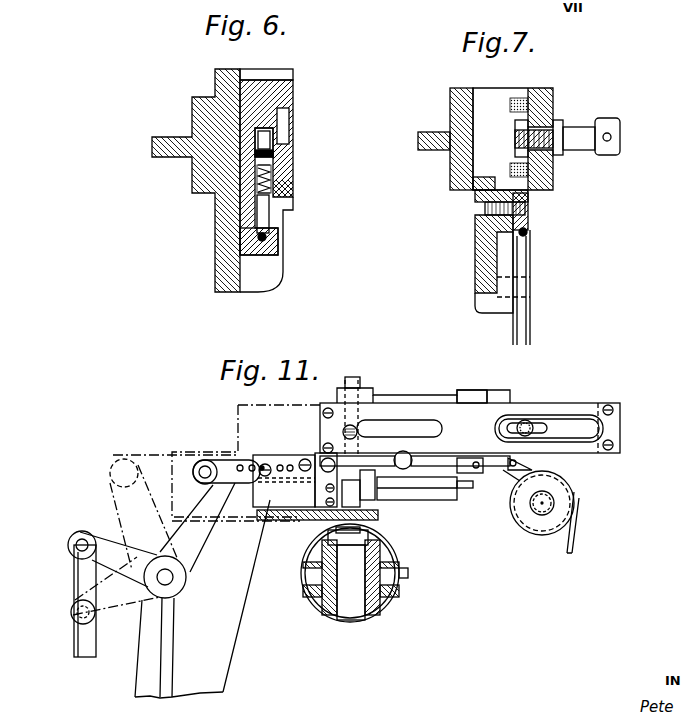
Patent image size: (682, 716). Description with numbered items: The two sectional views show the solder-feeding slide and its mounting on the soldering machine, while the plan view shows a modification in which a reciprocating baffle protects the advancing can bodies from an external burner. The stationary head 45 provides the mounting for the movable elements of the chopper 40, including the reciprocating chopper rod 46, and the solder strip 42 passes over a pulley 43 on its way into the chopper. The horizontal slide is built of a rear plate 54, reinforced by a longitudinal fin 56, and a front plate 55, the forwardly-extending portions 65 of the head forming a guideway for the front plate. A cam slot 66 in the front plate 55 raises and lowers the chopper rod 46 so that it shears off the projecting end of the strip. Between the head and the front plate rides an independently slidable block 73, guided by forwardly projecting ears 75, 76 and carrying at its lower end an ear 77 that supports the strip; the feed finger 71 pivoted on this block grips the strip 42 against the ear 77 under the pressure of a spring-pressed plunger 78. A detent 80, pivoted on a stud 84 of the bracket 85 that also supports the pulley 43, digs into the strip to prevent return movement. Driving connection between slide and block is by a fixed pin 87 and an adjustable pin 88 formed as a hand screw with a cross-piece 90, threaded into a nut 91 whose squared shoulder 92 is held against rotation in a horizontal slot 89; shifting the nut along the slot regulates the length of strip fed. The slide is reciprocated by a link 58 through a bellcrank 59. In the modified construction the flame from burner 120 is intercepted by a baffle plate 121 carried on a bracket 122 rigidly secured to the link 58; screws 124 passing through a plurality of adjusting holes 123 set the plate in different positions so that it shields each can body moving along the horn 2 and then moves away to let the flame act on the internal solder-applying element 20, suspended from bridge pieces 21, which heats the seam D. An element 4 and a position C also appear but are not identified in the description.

In FIG. 6, the stationary head 45 is at (222, 72).
In FIG. 6, the slide-block 73 is at (257, 102).
In FIG. 6, the forwardly-extending portions 65 is at (293, 72).
In FIG. 11, the forwardly-extending portions 65 is at (368, 397).
In FIG. 6, the forwardly projecting ear 76 is at (300, 80).
In FIG. 11, the forwardly projecting ear 76 is at (466, 392).
In FIG. 6, the front plate 55 is at (285, 126).
In FIG. 7, the front plate 55 is at (548, 190).
In FIG. 11, the front plate 55 is at (474, 425).
In FIG. 6, the driving pin 87 is at (275, 140).
In FIG. 6, the rear plate 54 is at (201, 185).
In FIG. 7, the rear plate 54 is at (460, 172).
In FIG. 6, the spring-pressed plunger 78 is at (240, 200).
In FIG. 6, the forwardly projecting ear 75 is at (283, 197).
In FIG. 11, the forwardly projecting ear 75 is at (457, 458).
In FIG. 6, the feed finger 71 is at (270, 215).
In FIG. 11, the feed finger 71 is at (478, 473).
In FIG. 6, the solder strip 42 is at (268, 238).
In FIG. 7, the solder strip 42 is at (527, 234).
In FIG. 11, the solder strip 42 is at (462, 474).
In FIG. 6, the forwardly projecting ear 77 is at (281, 250).
In FIG. 11, the forwardly projecting ear 77 is at (462, 488).
In FIG. 6, the longitudinal fin 56 is at (168, 141).
In FIG. 7, the longitudinal fin 56 is at (427, 133).
In FIG. 7, the nut 91 is at (513, 108).
In FIG. 7, the squared shoulder 92 is at (530, 110).
In FIG. 7, the horizontal slot 89 is at (557, 128).
In FIG. 11, the horizontal slot 89 is at (567, 428).
In FIG. 7, the cross-piece 90 is at (611, 133).
In FIG. 11, the cross-piece 90 is at (537, 424).
In FIG. 7, the driving pin 88 is at (515, 138).
In FIG. 7, the stud 84 is at (520, 205).
In FIG. 7, the bracket 85 is at (482, 247).
In FIG. 7, the detent 80 is at (530, 216).
In FIG. 11, the detent 80 is at (532, 471).
In FIG. 7, the pulley 43 is at (530, 316).
In FIG. 11, the pulley 43 is at (546, 531).
In FIG. 11, the chopper 40 is at (482, 428).
In FIG. 11, the chopper rod 46 is at (353, 378).
In FIG. 11, the cam slot 66 is at (400, 426).
In FIG. 11, the link 58 is at (222, 440).
In FIG. 11, the bellcrank 59 is at (127, 594).
In FIG. 11, the screws 124 is at (250, 458).
In FIG. 11, the adjusting holes 123 is at (271, 460).
In FIG. 11, the bracket 122 is at (270, 500).
In FIG. 11, the burner 120 is at (352, 492).
In FIG. 11, the baffle plate 121 is at (370, 520).
In FIG. 11, the bridge pieces 21 is at (340, 540).
In FIG. 11, the horn 2 is at (313, 582).
In FIG. 11, the solder-applying element 20 is at (353, 597).
In FIG. 11, the pin 4 is at (409, 573).
In FIG. 11, the position C is at (397, 606).
In FIG. 11, the seam D is at (350, 620).